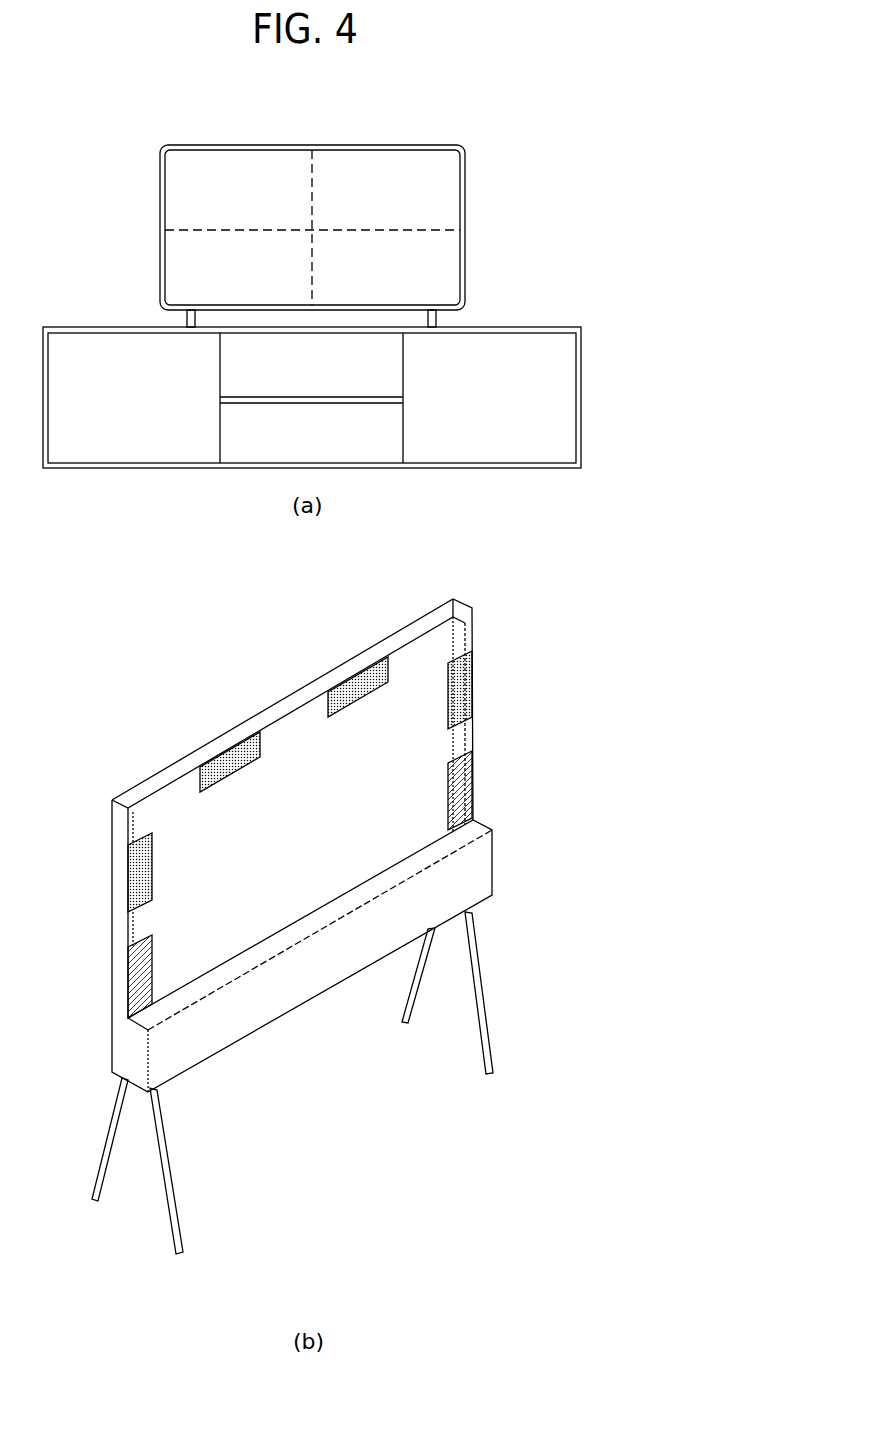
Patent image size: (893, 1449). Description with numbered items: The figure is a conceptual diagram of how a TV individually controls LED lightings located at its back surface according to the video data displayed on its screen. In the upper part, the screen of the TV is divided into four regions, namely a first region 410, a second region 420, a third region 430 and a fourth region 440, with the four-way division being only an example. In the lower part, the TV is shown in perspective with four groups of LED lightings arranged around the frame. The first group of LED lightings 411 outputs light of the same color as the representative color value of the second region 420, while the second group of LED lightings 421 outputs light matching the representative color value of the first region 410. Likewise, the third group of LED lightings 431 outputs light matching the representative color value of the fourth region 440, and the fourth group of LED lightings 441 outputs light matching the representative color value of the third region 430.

The first region 410 is at (167, 200).
The second region 420 is at (455, 188).
The third region 430 is at (167, 278).
The fourth region 440 is at (455, 273).
The first group of LED lightings 411 is at (145, 852).
The second group of LED lightings 421 is at (460, 673).
The third group of LED lightings 431 is at (143, 990).
The fourth group of LED lightings 441 is at (466, 777).